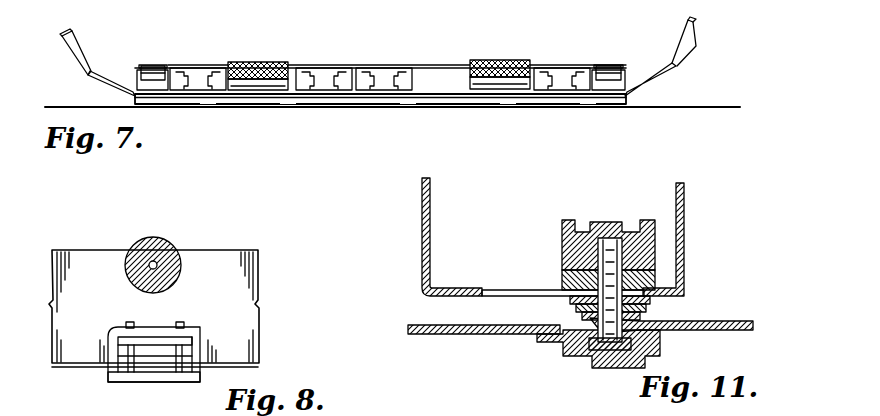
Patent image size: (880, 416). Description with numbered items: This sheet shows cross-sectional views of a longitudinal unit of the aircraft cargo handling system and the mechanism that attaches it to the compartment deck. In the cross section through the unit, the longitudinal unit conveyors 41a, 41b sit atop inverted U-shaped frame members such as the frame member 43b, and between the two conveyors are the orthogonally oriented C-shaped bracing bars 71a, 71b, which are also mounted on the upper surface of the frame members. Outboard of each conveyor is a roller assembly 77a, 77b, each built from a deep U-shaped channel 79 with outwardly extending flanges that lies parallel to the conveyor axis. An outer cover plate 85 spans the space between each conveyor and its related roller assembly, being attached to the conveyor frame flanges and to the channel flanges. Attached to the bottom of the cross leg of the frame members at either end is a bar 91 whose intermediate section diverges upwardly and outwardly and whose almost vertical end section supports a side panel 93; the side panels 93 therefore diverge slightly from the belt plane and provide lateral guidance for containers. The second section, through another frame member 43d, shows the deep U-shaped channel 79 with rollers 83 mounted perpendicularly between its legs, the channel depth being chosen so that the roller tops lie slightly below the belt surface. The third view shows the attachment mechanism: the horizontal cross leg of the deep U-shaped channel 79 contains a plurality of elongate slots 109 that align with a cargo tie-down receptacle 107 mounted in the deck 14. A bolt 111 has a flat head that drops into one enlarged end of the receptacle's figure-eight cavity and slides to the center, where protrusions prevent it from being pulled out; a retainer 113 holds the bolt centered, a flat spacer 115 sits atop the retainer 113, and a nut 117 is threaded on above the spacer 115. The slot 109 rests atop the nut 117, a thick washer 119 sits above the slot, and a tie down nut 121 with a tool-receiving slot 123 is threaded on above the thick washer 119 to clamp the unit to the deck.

In FIG. 11, the deck 14 is at (460, 335).
In FIG. 7, the longitudinal unit conveyor 41a is at (497, 61).
In FIG. 7, the longitudinal unit conveyor 41b is at (250, 62).
In FIG. 7, the inverted U-shaped frame member 43b is at (330, 100).
In FIG. 8, the inverted U-shaped frame member 43d is at (146, 333).
In FIG. 7, the C-shaped bracing bar 71a is at (410, 72).
In FIG. 7, the C-shaped bracing bar 71b is at (325, 72).
In FIG. 7, the roller assembly 77a is at (607, 67).
In FIG. 7, the roller assembly 77b is at (153, 65).
In FIG. 8, the deep U-shaped channel 79 is at (220, 268).
In FIG. 11, the deep U-shaped channel 79 is at (433, 214).
In FIG. 8, the roller 83 is at (160, 250).
In FIG. 7, the outer cover plate 85 is at (200, 68).
In FIG. 7, the bar 91 is at (98, 80).
In FIG. 7, the side panel 93 is at (74, 33).
In FIG. 11, the cargo tie-down receptacle 107 is at (566, 352).
In FIG. 11, the elongate slot 109 is at (492, 290).
In FIG. 11, the bolt 111 is at (570, 301).
In FIG. 11, the retainer 113 is at (690, 321).
In FIG. 11, the flat spacer 115 is at (675, 314).
In FIG. 11, the nut 117 is at (655, 305).
In FIG. 11, the thick washer 119 is at (565, 276).
In FIG. 11, the tie down nut 121 is at (584, 222).
In FIG. 11, the slot 123 is at (602, 236).